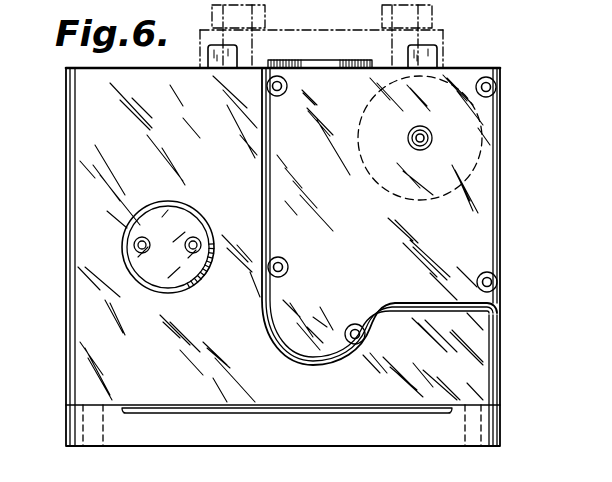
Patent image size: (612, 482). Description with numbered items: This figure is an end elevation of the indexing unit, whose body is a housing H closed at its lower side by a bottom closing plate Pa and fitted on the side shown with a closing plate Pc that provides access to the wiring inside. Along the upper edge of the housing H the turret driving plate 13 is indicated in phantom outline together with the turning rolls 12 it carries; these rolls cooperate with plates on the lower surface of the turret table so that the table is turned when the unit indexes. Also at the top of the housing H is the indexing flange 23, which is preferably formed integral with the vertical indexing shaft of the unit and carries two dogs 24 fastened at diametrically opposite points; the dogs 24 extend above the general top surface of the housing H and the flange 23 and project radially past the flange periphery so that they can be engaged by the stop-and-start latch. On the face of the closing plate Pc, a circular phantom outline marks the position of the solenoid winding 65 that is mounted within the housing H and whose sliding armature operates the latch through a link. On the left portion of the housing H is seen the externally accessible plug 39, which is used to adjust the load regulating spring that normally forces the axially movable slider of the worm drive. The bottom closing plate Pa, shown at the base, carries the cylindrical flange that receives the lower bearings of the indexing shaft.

The turning rolls 12 is at (265, 15).
The turret driving plate 13 is at (443, 33).
The indexing flange 23 is at (320, 66).
The dogs 24 is at (208, 53).
The externally accessible plug 39 is at (147, 268).
The solenoid winding 65 is at (473, 115).
The closing plate Pc is at (478, 235).
The housing H is at (477, 337).
The bottom closing plate Pa is at (492, 425).